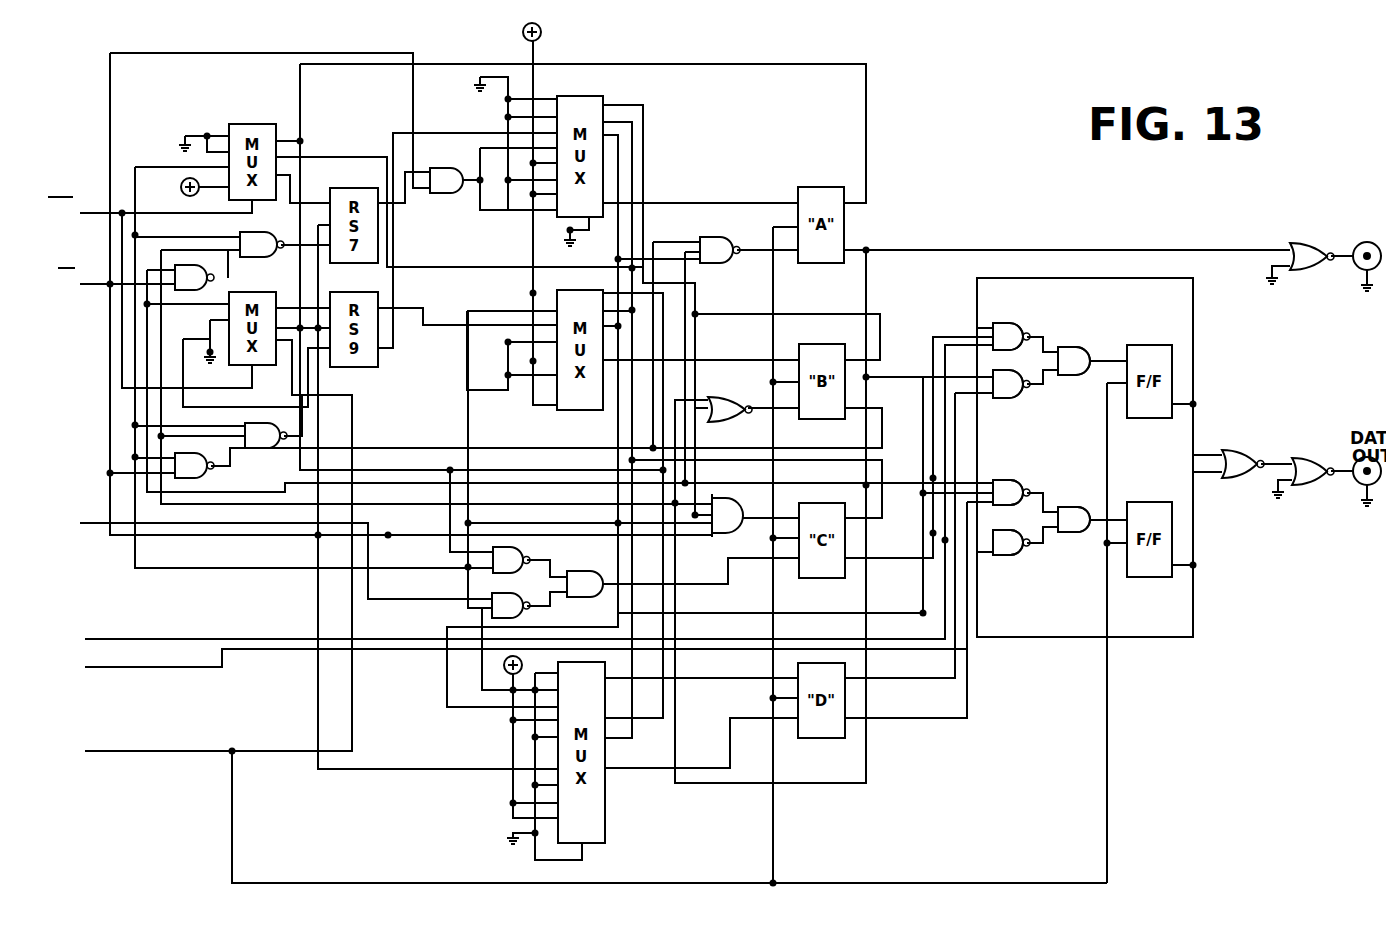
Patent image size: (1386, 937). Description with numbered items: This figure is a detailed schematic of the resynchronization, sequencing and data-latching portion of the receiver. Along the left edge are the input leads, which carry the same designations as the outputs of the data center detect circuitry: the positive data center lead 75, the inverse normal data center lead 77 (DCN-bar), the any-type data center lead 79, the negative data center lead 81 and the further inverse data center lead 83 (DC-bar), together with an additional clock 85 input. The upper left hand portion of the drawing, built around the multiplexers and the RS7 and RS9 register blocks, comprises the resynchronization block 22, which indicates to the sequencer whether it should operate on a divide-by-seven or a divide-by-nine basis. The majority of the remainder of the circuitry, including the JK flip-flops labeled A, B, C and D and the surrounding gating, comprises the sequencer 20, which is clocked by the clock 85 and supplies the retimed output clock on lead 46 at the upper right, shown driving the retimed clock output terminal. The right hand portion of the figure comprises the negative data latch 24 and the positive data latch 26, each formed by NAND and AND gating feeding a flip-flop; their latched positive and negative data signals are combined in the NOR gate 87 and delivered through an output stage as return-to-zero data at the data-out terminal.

The sequencer block 20 is at (920, 332).
The resynchronization block 22 is at (446, 250).
The negative data latch 24 is at (1090, 573).
The positive data latch 26 is at (1090, 413).
The lead 46 is at (1341, 246).
The lead 75 is at (104, 637).
The lead 77 is at (89, 211).
The lead 79 is at (90, 521).
The lead 81 is at (110, 669).
The lead 83 is at (88, 287).
The clock 85 is at (105, 753).
The NOR gate 87 is at (1230, 449).